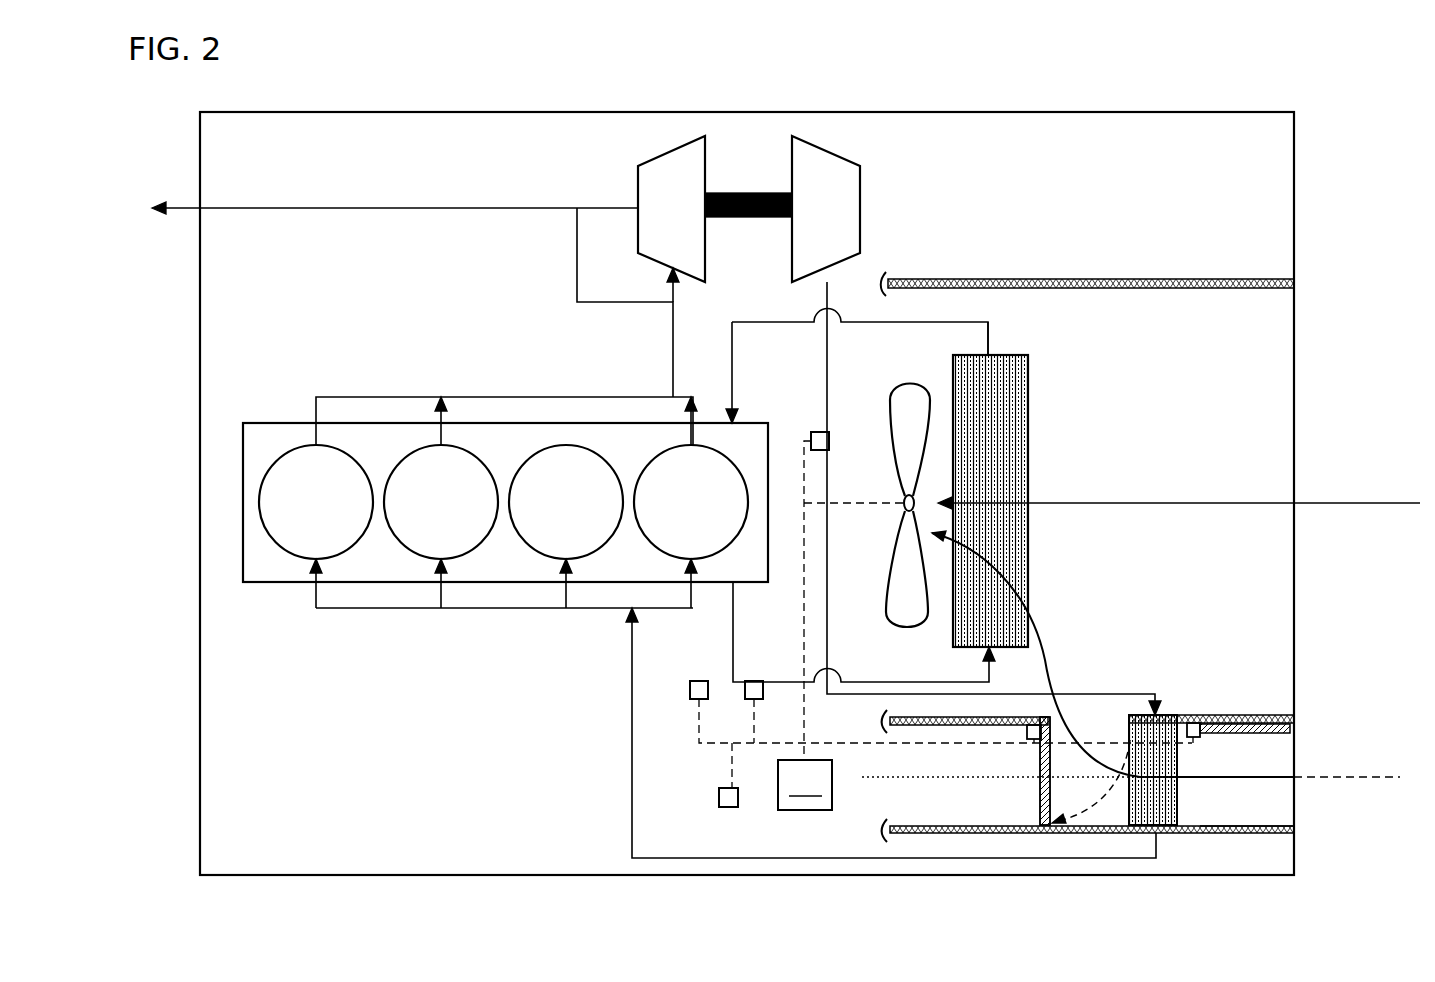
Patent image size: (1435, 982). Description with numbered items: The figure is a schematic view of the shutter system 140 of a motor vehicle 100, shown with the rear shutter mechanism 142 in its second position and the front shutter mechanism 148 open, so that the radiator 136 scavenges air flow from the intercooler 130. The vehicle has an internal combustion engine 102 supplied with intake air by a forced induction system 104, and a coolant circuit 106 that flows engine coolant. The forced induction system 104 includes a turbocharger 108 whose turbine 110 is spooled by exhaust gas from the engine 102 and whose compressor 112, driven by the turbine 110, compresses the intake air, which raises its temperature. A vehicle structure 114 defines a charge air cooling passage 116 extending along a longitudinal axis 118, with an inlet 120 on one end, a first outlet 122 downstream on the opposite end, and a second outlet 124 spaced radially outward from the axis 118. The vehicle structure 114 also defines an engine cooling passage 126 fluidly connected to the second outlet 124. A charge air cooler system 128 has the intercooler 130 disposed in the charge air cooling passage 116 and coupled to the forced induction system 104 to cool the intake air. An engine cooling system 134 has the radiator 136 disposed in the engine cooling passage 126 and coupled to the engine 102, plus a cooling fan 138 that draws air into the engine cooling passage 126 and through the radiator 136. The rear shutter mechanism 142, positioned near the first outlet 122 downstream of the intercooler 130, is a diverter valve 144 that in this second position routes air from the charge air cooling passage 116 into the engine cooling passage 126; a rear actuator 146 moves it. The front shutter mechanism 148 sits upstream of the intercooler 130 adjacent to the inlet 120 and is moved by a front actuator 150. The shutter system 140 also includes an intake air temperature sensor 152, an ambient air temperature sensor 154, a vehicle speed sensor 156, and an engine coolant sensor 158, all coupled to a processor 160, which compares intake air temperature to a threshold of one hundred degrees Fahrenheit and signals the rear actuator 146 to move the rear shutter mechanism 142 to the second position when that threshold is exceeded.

The motor vehicle 100 is at (190, 178).
The internal combustion engine 102 is at (243, 455).
The forced induction system 104 is at (706, 168).
The coolant circuit 106 is at (988, 335).
The turbocharger 108 is at (665, 150).
The turbine 110 is at (712, 172).
The compressor 112 is at (790, 172).
The vehicle structure 114 is at (1215, 836).
The charge air cooling passage 116 is at (1278, 826).
The longitudinal axis 118 is at (1364, 777).
The inlet 120 is at (1294, 750).
The first outlet 122 is at (888, 812).
The second outlet 124 is at (1128, 720).
The engine cooling passage 126 is at (1283, 290).
The charge air cooler system 128 is at (663, 845).
The intercooler 130 is at (1130, 815).
The engine cooling system 134 is at (1077, 488).
The radiator 136 is at (1028, 425).
The cooling fan 138 is at (893, 430).
The shutter system 140 is at (1142, 776).
The rear shutter mechanism 142 is at (1038, 765).
The diverter valve 144 is at (1038, 765).
The rear actuator 146 is at (1032, 725).
The front shutter mechanism 148 is at (1262, 735).
The front actuator 150 is at (1192, 723).
The intake air temperature sensor 152 is at (813, 434).
The ambient air temperature sensor 154 is at (690, 690).
The vehicle speed sensor 156 is at (719, 800).
The engine coolant sensor 158 is at (763, 690).
The processor 160 is at (805, 785).